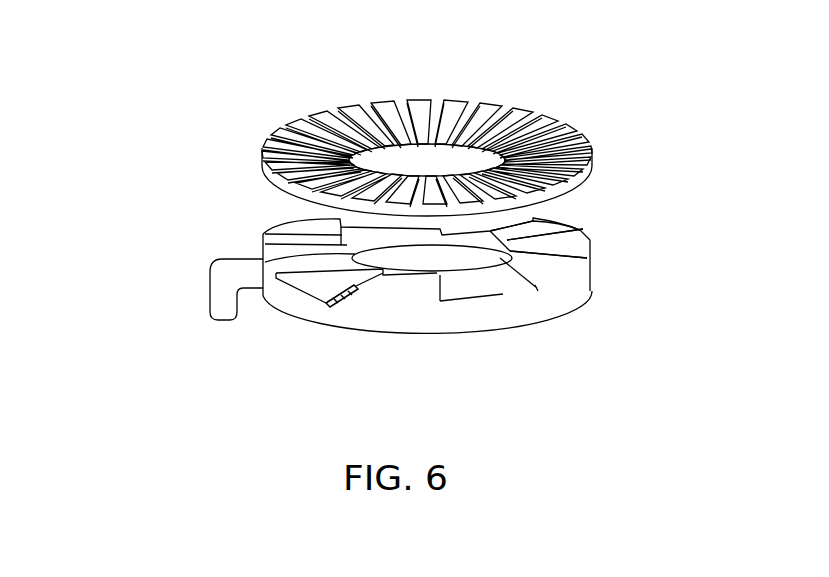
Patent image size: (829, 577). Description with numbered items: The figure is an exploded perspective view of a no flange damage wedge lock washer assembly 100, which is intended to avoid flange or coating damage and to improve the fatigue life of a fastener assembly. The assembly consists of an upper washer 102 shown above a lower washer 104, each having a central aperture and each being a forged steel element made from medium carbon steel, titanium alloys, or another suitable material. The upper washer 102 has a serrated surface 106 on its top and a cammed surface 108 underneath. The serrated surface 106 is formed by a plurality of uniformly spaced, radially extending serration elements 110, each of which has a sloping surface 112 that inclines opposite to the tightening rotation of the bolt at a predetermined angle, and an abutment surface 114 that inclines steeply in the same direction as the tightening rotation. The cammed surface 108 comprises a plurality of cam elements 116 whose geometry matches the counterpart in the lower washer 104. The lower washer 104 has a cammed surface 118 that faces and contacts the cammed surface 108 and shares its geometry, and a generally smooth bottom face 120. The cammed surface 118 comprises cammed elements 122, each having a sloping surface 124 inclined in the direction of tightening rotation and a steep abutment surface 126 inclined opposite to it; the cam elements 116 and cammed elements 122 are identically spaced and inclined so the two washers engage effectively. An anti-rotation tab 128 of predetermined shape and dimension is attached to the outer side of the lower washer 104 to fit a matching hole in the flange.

The no flange damage wedge lock washer assembly 100 is at (241, 101).
The upper washer 102 is at (260, 182).
The lower washer 104 is at (405, 315).
The serrated surface 106 is at (336, 112).
The cammed surface 108 is at (280, 214).
The serration elements 110 is at (380, 100).
The sloping surface 112 is at (430, 104).
The abutment surface 114 is at (478, 108).
The cam elements 116 is at (540, 216).
The cammed surface 118 is at (568, 243).
The bottom face 120 is at (372, 332).
The cammed elements 122 is at (588, 283).
The sloping surface 124 is at (483, 288).
The abutment surface 126 is at (340, 294).
The anti-rotation tab 128 is at (220, 302).